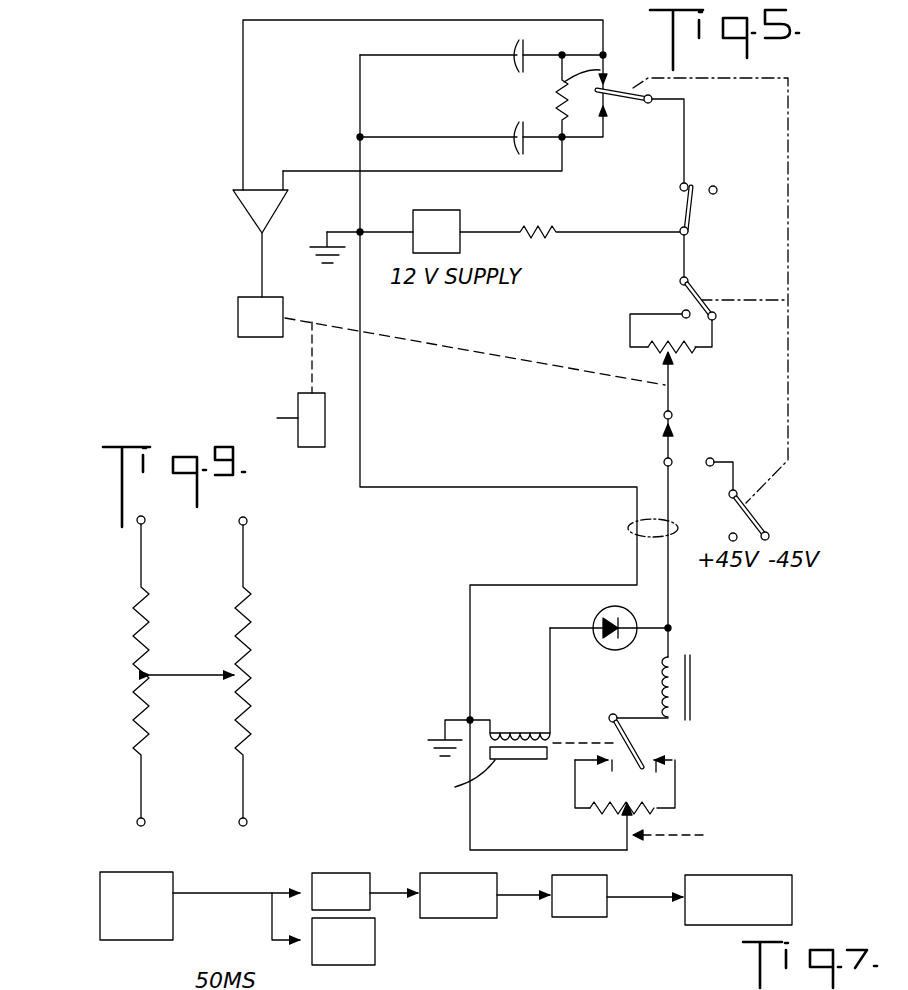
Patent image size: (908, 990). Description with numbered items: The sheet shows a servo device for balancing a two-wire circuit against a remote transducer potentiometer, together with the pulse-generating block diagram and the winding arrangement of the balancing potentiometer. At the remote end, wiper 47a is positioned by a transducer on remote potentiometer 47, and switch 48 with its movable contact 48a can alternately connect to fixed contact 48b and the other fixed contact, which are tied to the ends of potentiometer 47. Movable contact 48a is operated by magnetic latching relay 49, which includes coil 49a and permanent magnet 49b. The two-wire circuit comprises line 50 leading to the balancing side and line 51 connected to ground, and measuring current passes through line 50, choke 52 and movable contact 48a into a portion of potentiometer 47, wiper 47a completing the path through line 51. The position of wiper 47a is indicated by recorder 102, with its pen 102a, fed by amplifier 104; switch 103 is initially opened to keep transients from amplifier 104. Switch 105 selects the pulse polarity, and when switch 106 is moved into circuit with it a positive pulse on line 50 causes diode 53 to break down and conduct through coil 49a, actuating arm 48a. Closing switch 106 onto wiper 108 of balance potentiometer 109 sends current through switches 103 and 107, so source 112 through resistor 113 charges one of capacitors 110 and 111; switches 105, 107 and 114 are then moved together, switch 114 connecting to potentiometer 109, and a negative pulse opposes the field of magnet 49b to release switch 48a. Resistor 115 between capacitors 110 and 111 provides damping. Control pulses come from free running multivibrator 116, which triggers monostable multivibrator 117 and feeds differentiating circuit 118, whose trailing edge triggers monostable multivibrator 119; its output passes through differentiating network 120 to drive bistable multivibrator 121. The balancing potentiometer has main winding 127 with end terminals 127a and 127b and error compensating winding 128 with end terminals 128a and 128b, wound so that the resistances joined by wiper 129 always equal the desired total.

In FIG. 5, the recorder 102 is at (238, 303).
In FIG. 5, the pen 102a is at (312, 447).
In FIG. 5, the switch 103 is at (697, 215).
In FIG. 5, the amplifier 104 is at (233, 193).
In FIG. 5, the switch 105 is at (748, 512).
In FIG. 5, the switch 106 is at (668, 440).
In FIG. 5, the switch 107 is at (634, 100).
In FIG. 5, the wiper 108 is at (672, 368).
In FIG. 5, the balance potentiometer 109 is at (634, 301).
In FIG. 5, the capacitor 110 is at (525, 52).
In FIG. 5, the capacitor 111 is at (528, 120).
In FIG. 5, the source 112 is at (458, 213).
In FIG. 5, the resistor 113 is at (550, 226).
In FIG. 5, the switch 114 is at (700, 287).
In FIG. 5, the resistor 115 is at (617, 52).
In FIG. 7, the free running multivibrator 116 is at (103, 930).
In FIG. 7, the monostable multivibrator 117 is at (373, 965).
In FIG. 7, the differentiating circuit 118 is at (388, 860).
In FIG. 7, the monostable multivibrator 119 is at (462, 918).
In FIG. 7, the differentiating network 120 is at (582, 917).
In FIG. 7, the bistable multivibrator 121 is at (745, 925).
In FIG. 9, the main winding 127 is at (132, 726).
In FIG. 9, the end terminal 127a is at (138, 525).
In FIG. 9, the end terminal 127b is at (137, 822).
In FIG. 9, the error compensating winding 128 is at (268, 636).
In FIG. 9, the end terminal 128a is at (248, 527).
In FIG. 9, the end terminal 128b is at (248, 822).
In FIG. 9, the wiper 129 is at (186, 672).
In FIG. 5, the remote potentiometer 47 is at (660, 816).
In FIG. 5, the wiper 47a is at (625, 834).
In FIG. 5, the switch 48 is at (642, 733).
In FIG. 5, the movable contact 48a is at (642, 748).
In FIG. 5, the fixed contact 48b is at (648, 781).
In FIG. 5, the magnetic latching relay 49 is at (554, 724).
In FIG. 5, the coil 49a is at (518, 724).
In FIG. 5, the permanent magnet 49b is at (512, 760).
In FIG. 5, the line 50 is at (672, 606).
In FIG. 5, the line 51 is at (455, 717).
In FIG. 5, the choke 52 is at (693, 660).
In FIG. 5, the diode 53 is at (592, 620).